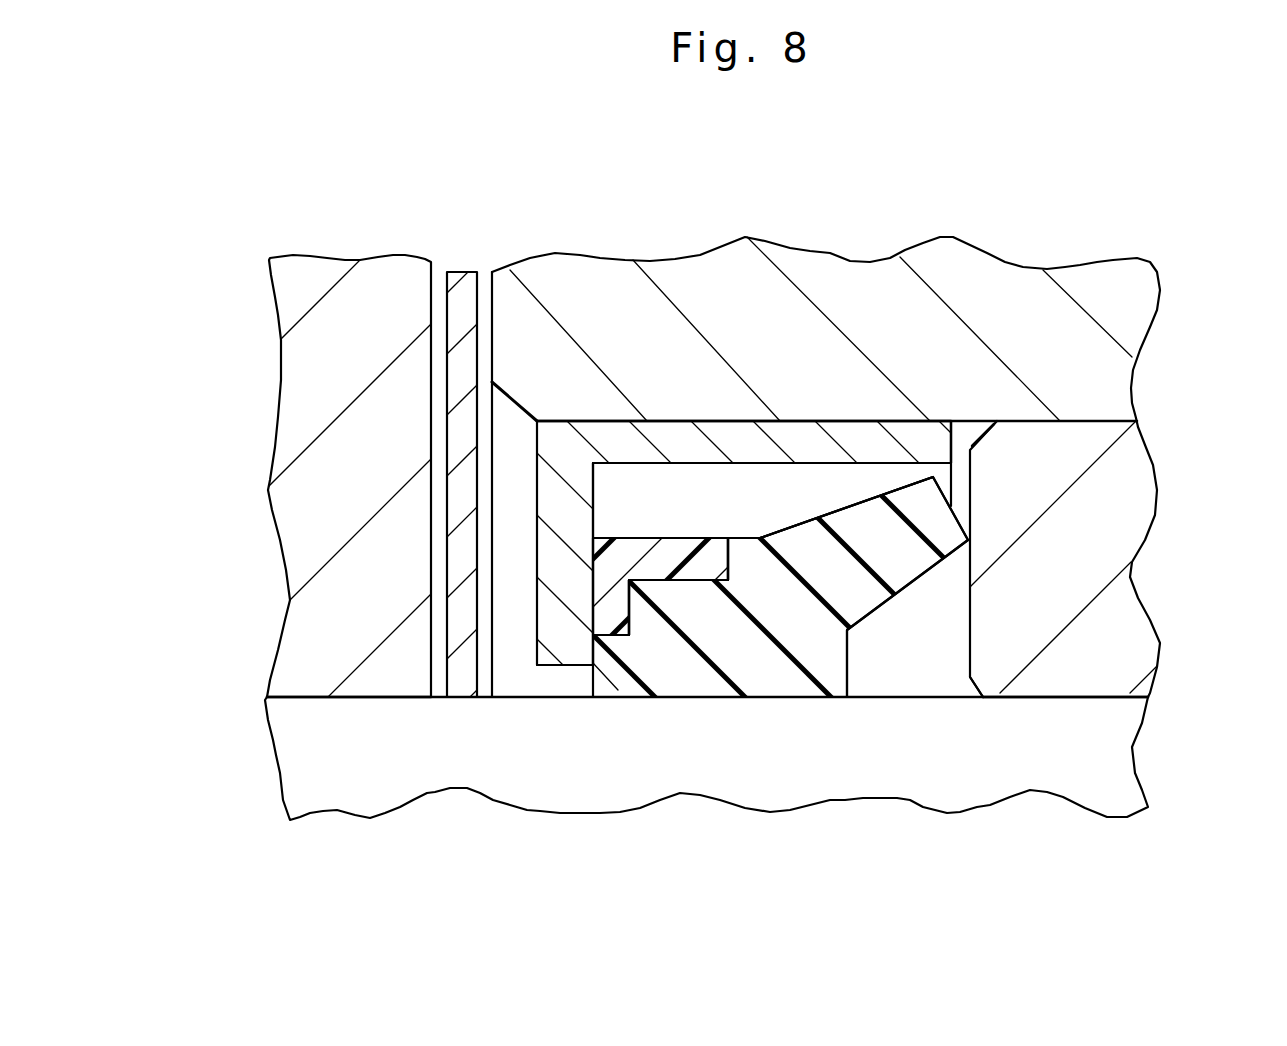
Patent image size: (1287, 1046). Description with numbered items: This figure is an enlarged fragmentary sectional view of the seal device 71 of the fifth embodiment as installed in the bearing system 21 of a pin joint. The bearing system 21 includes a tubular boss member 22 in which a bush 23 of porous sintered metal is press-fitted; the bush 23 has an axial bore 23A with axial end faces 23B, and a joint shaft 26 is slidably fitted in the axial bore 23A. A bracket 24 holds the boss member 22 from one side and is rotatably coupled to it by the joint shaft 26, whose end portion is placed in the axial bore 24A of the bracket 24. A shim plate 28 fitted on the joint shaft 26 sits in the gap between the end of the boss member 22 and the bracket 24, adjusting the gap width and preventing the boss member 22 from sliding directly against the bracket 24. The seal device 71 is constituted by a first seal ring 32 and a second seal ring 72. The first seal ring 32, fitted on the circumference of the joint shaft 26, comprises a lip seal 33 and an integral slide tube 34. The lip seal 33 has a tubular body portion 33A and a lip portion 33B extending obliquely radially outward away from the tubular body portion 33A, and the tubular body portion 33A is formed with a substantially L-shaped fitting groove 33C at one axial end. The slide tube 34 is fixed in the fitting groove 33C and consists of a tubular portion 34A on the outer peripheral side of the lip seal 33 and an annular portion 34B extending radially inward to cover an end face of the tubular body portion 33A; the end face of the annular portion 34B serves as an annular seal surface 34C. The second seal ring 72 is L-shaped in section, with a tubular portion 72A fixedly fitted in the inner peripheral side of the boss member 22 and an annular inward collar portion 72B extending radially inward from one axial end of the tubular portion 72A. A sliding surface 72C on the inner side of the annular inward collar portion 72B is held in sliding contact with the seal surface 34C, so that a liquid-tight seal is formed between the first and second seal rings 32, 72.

The bearing system 21 is at (1135, 260).
The boss member 22 is at (1068, 280).
The bush 23 is at (1120, 549).
The axial bore 23A is at (1113, 697).
The axial end faces 23B is at (963, 655).
The bracket 24 is at (305, 293).
The axial bore 24A is at (310, 697).
The joint shaft 26 is at (332, 793).
The shim plate 28 is at (457, 268).
The first seal ring 32 is at (760, 537).
The lip seal 33 is at (830, 640).
The tubular body portion 33A is at (793, 640).
The lip portion 33B is at (920, 553).
The fitting groove 33C is at (620, 645).
The slide tube 34 is at (690, 548).
The tubular portion 34A is at (698, 568).
The annular portion 34B is at (610, 610).
The annular seal surface 34C is at (600, 617).
The seal device 71 is at (907, 421).
The second seal ring 72 is at (575, 442).
The tubular portion 72A is at (847, 440).
The annular inward collar portion 72B is at (553, 635).
The sliding surface 72C is at (597, 580).